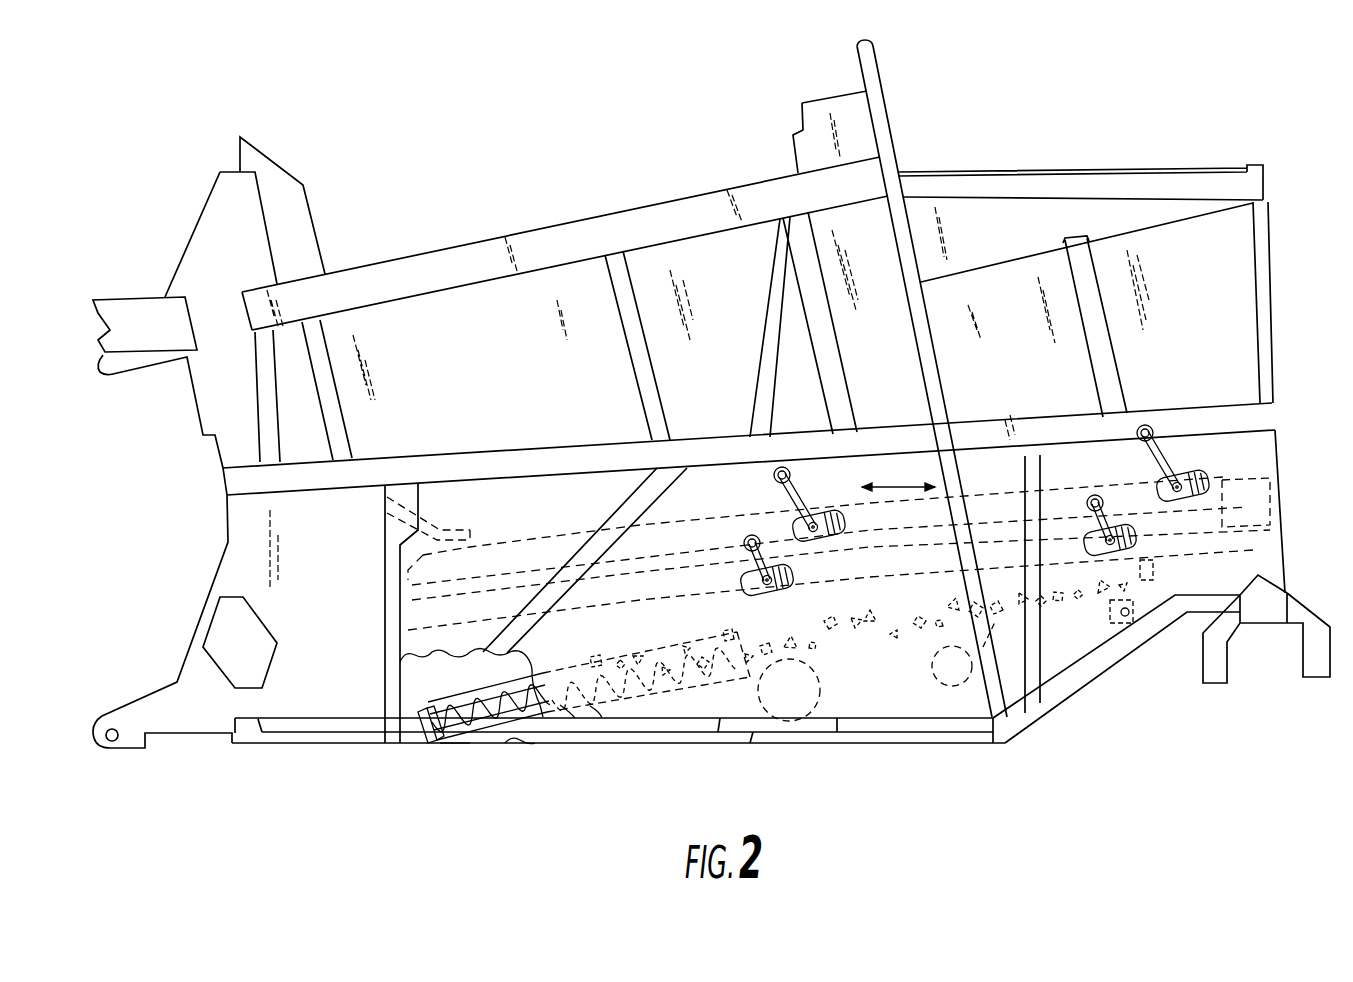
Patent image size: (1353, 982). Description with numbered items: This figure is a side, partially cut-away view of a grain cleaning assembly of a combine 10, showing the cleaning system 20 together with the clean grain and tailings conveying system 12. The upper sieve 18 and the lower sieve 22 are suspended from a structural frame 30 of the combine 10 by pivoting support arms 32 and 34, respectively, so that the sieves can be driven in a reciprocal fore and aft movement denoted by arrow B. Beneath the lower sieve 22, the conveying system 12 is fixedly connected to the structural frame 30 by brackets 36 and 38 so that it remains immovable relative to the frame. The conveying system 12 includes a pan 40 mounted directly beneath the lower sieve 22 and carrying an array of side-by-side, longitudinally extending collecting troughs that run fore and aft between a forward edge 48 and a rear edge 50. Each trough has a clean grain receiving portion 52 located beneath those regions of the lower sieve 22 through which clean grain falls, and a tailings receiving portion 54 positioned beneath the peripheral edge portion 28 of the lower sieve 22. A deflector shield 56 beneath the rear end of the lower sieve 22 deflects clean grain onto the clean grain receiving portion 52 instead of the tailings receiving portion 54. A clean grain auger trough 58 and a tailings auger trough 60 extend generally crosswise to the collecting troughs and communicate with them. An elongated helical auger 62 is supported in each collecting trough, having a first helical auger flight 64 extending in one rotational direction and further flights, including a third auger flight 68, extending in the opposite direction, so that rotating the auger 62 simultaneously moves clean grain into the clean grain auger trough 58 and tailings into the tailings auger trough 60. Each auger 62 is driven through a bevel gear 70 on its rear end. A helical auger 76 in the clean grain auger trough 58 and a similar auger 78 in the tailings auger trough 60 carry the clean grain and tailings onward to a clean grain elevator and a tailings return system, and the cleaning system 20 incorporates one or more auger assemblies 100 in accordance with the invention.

The combine 10 is at (1182, 140).
The clean grain and tailings conveying system 12 is at (463, 748).
The sieve 18 is at (1217, 487).
The cleaning system 20 is at (1103, 477).
The lower sieve 22 is at (413, 610).
The peripheral edge portion 28 is at (1050, 547).
The structural frame 30 is at (1276, 378).
The pivoting support arm 32 is at (803, 513).
The pivoting support arm 34 is at (770, 557).
The bracket 36 is at (1135, 607).
The bracket 38 is at (520, 744).
The pan 40 is at (448, 744).
The forward edge 48 is at (385, 703).
The rear edge 50 is at (1132, 588).
The clean grain receiving portion 52 is at (655, 698).
The tailings receiving portion 54 is at (1087, 603).
The deflector shield 56 is at (947, 577).
The clean grain auger trough 58 is at (763, 725).
The tailings auger trough 60 is at (930, 668).
The helical auger 62 is at (465, 688).
The first helical auger flight 64 is at (597, 712).
The third auger flight 68 is at (1047, 600).
The bevel gear 70 is at (1237, 560).
The helical auger 76 is at (823, 667).
The auger 78 is at (938, 683).
The auger assembly 100 is at (792, 733).
The arrow B is at (905, 483).